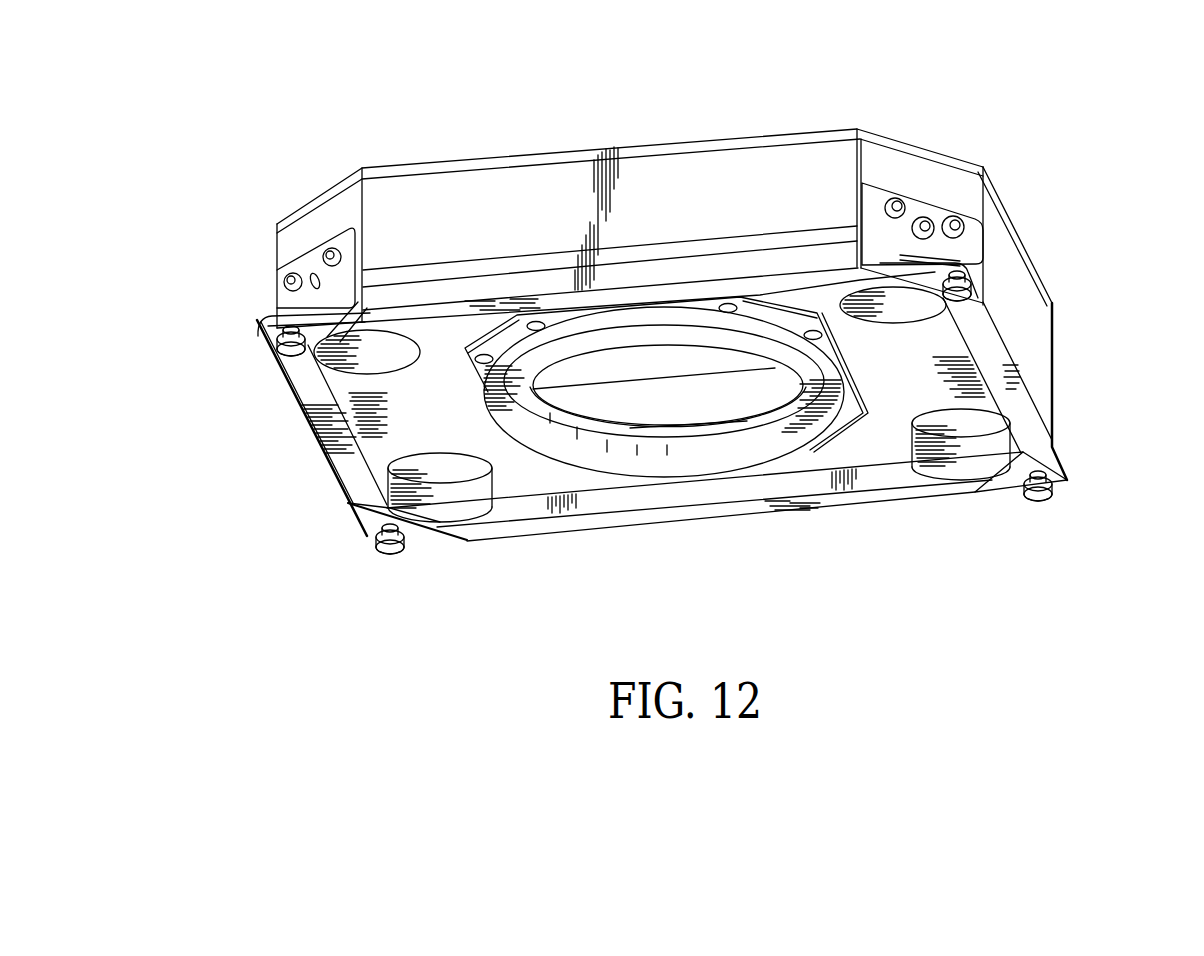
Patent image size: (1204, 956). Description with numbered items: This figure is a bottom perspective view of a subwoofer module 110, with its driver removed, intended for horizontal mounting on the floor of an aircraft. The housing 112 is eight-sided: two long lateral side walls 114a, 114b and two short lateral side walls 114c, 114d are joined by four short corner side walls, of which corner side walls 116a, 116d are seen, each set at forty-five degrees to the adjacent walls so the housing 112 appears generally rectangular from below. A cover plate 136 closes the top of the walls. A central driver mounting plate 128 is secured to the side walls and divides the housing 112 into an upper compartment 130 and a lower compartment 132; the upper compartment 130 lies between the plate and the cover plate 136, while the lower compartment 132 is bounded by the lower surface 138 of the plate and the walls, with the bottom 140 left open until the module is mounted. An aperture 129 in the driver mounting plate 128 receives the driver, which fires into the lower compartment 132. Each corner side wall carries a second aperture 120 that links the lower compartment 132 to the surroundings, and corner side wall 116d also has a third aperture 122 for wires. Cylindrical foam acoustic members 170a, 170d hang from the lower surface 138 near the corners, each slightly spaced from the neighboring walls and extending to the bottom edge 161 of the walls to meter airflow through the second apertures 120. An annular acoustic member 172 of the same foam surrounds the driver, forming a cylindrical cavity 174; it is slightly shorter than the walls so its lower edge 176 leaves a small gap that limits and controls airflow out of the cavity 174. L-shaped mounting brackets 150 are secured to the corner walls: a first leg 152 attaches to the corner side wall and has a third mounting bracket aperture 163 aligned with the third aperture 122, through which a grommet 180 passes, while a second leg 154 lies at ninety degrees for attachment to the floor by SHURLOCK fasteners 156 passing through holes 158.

The subwoofer module 110 is at (320, 168).
The housing 112 is at (604, 158).
The long lateral side wall 114a is at (750, 513).
The long lateral side wall 114b is at (742, 170).
The short lateral side wall 114c is at (1007, 246).
The short lateral side wall 114d is at (323, 463).
The corner side wall 116a is at (967, 175).
The corner side wall 116d is at (288, 217).
The second aperture 120 is at (350, 507).
The third aperture 122 is at (978, 258).
The central driver mounting plate 128 is at (528, 477).
The aperture 129 is at (532, 388).
The upper compartment 130 is at (650, 380).
The lower compartment 132 is at (447, 330).
The cover plate 136 is at (810, 129).
The lower surface 138 is at (1005, 358).
The bottom 140 is at (312, 417).
The mounting bracket 150 is at (277, 287).
The first leg 152 is at (350, 237).
The second leg 154 is at (262, 337).
The SHURLOCK fastener 156 is at (938, 287).
The hole 158 is at (260, 320).
The bottom edge 161 is at (917, 500).
The third mounting bracket aperture 163 is at (313, 270).
The foam acoustic member 170a is at (890, 317).
The foam acoustic member 170d is at (383, 353).
The annular acoustic member 172 is at (792, 440).
The cylindrical cavity 174 is at (648, 450).
The lower edge 176 is at (874, 193).
The grommet 180 is at (922, 217).